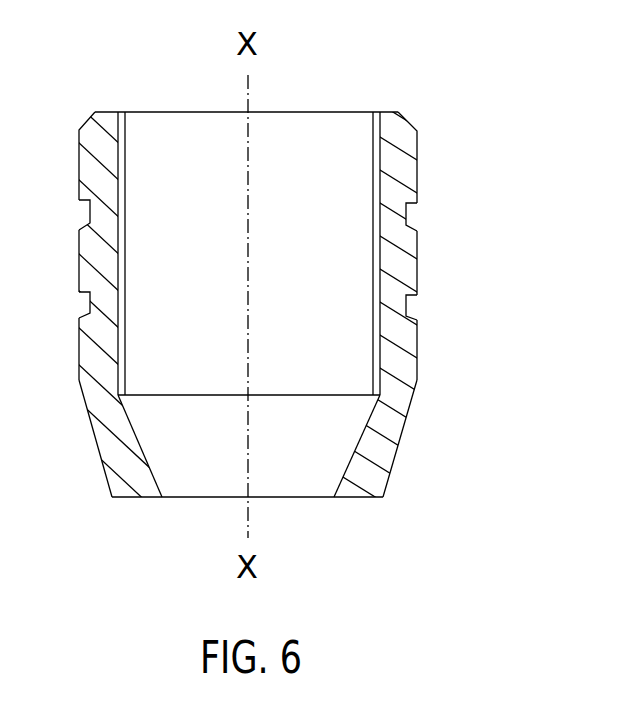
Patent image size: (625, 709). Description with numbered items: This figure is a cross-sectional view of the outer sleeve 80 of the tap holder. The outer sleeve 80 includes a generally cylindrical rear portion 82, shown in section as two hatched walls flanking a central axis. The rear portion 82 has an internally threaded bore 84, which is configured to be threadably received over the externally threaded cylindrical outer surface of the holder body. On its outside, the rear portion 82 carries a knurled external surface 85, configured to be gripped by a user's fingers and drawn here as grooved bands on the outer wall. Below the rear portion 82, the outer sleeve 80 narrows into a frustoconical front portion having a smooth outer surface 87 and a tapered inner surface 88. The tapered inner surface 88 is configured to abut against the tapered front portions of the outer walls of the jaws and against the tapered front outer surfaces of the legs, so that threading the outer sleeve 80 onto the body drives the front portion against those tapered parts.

The outer sleeve 80 is at (500, 92).
The rear portion 82 is at (79, 347).
The internally threaded bore 84 is at (373, 232).
The knurled external surface 85 is at (79, 255).
The smooth outer surface 87 is at (397, 453).
The tapered inner surface 88 is at (350, 452).